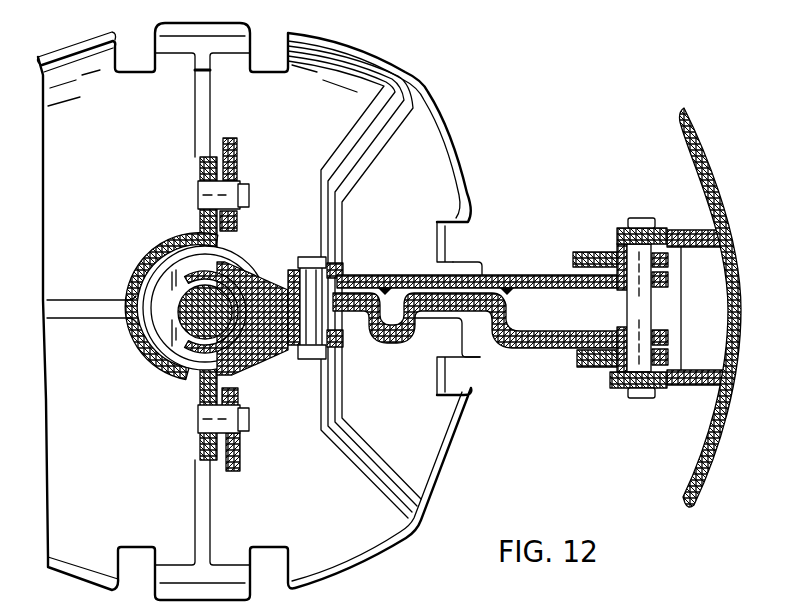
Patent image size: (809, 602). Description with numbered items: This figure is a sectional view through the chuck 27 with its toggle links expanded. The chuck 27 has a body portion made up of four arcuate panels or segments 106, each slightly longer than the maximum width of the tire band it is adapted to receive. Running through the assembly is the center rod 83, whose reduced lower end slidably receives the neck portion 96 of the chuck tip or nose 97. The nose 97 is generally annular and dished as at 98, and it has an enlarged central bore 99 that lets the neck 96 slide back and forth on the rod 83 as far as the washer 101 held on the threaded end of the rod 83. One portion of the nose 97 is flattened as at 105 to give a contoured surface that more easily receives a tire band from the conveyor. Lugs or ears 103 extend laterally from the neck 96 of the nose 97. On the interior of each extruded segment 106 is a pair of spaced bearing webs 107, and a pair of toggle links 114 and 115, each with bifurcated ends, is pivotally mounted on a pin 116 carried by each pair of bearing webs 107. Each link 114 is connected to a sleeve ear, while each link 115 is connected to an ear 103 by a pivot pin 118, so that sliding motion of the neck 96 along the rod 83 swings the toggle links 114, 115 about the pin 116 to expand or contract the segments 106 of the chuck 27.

The chuck 27 is at (452, 124).
The center rod 83 is at (196, 326).
The neck portion 96 is at (242, 356).
The chuck tip or nose 97 is at (414, 69).
The dished portion 98 is at (323, 80).
The enlarged central bore 99 is at (153, 282).
The washer 101 is at (162, 328).
The lugs or ears 103 is at (262, 292).
The flattened portion 105 is at (437, 184).
The arcuate panels or segments 106 is at (715, 180).
The bearing webs 107 is at (703, 369).
The toggle link 114 is at (596, 253).
The toggle link 115 is at (498, 276).
The pin 116 is at (645, 222).
The pivot pin 118 is at (248, 190).